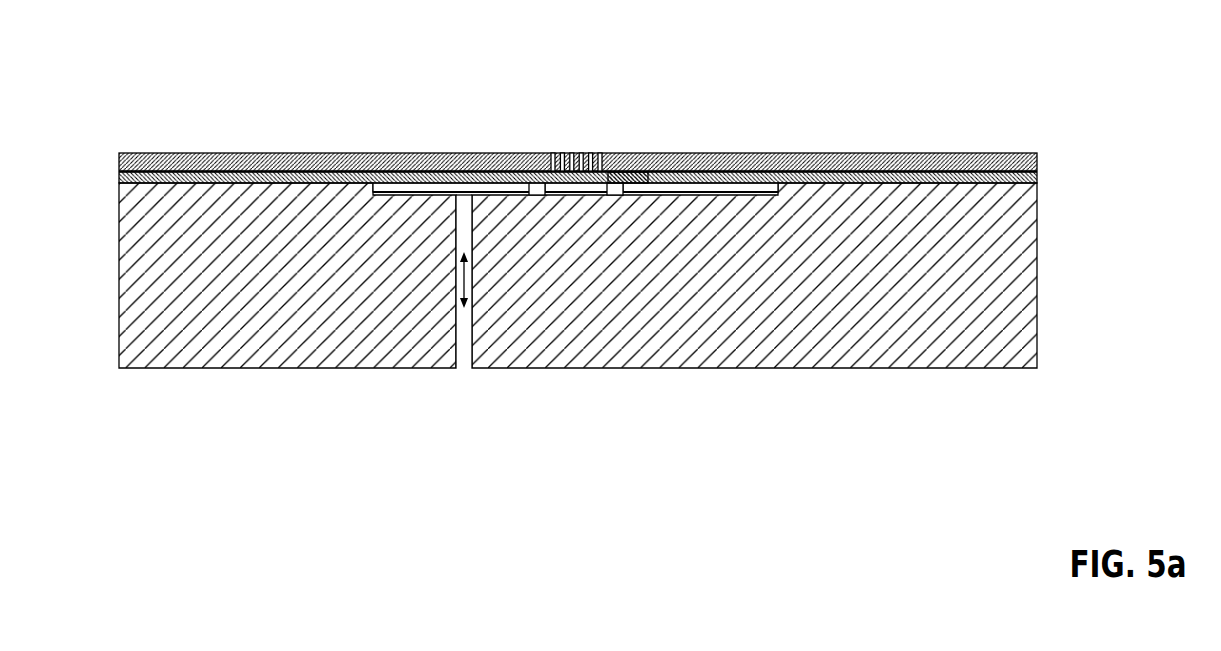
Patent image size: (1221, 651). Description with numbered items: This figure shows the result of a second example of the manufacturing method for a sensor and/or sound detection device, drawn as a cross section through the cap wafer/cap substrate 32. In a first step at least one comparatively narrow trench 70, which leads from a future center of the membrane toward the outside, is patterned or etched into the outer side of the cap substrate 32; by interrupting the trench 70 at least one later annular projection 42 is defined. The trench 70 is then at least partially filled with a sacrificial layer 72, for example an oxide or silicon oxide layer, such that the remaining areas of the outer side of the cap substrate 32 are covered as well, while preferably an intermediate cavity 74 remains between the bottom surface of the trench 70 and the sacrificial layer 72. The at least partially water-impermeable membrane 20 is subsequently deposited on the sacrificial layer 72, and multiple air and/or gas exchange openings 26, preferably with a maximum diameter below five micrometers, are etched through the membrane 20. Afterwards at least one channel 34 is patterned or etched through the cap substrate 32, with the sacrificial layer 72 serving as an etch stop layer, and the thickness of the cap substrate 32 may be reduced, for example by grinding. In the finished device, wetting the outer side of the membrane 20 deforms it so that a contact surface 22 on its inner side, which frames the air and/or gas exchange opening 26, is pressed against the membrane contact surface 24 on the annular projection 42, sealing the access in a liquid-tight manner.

The membrane 20 is at (920, 163).
The contact surface 22 is at (543, 179).
The membrane contact surface 24 is at (619, 183).
The air and/or gas exchange opening 26 is at (570, 146).
The cap wafer/cap substrate 32 is at (1062, 181).
The channel 34 is at (456, 276).
The annular projection 42 is at (536, 189).
The trench 70 is at (412, 190).
The sacrificial layer 72 is at (742, 183).
The intermediate cavity 74 is at (573, 193).